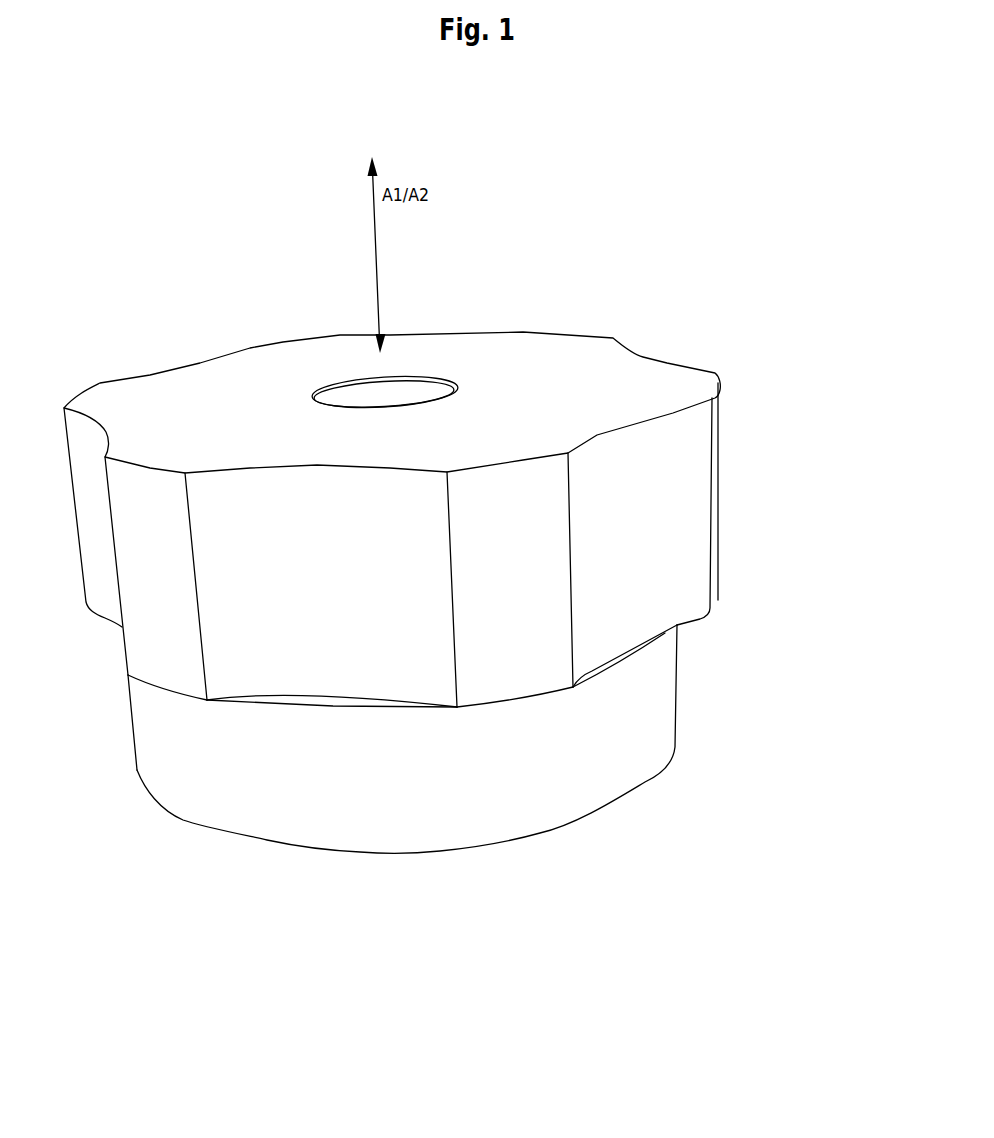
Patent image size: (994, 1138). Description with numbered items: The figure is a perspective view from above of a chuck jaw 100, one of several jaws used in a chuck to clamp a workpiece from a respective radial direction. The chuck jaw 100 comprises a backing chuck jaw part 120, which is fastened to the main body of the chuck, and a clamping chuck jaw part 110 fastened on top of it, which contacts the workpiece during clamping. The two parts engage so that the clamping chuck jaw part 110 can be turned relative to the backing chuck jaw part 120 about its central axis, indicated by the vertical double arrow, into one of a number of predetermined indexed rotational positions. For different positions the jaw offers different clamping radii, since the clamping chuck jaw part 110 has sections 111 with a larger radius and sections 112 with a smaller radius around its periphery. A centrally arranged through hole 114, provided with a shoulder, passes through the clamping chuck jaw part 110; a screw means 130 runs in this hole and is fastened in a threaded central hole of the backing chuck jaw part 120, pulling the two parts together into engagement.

The chuck jaw 100 is at (782, 432).
The clamping chuck jaw part 110 is at (718, 567).
The sections with larger radius 111 is at (511, 653).
The sections with smaller radius 112 is at (337, 660).
The through hole 114 is at (450, 382).
The backing chuck jaw part 120 is at (680, 698).
The screw means 130 is at (395, 407).